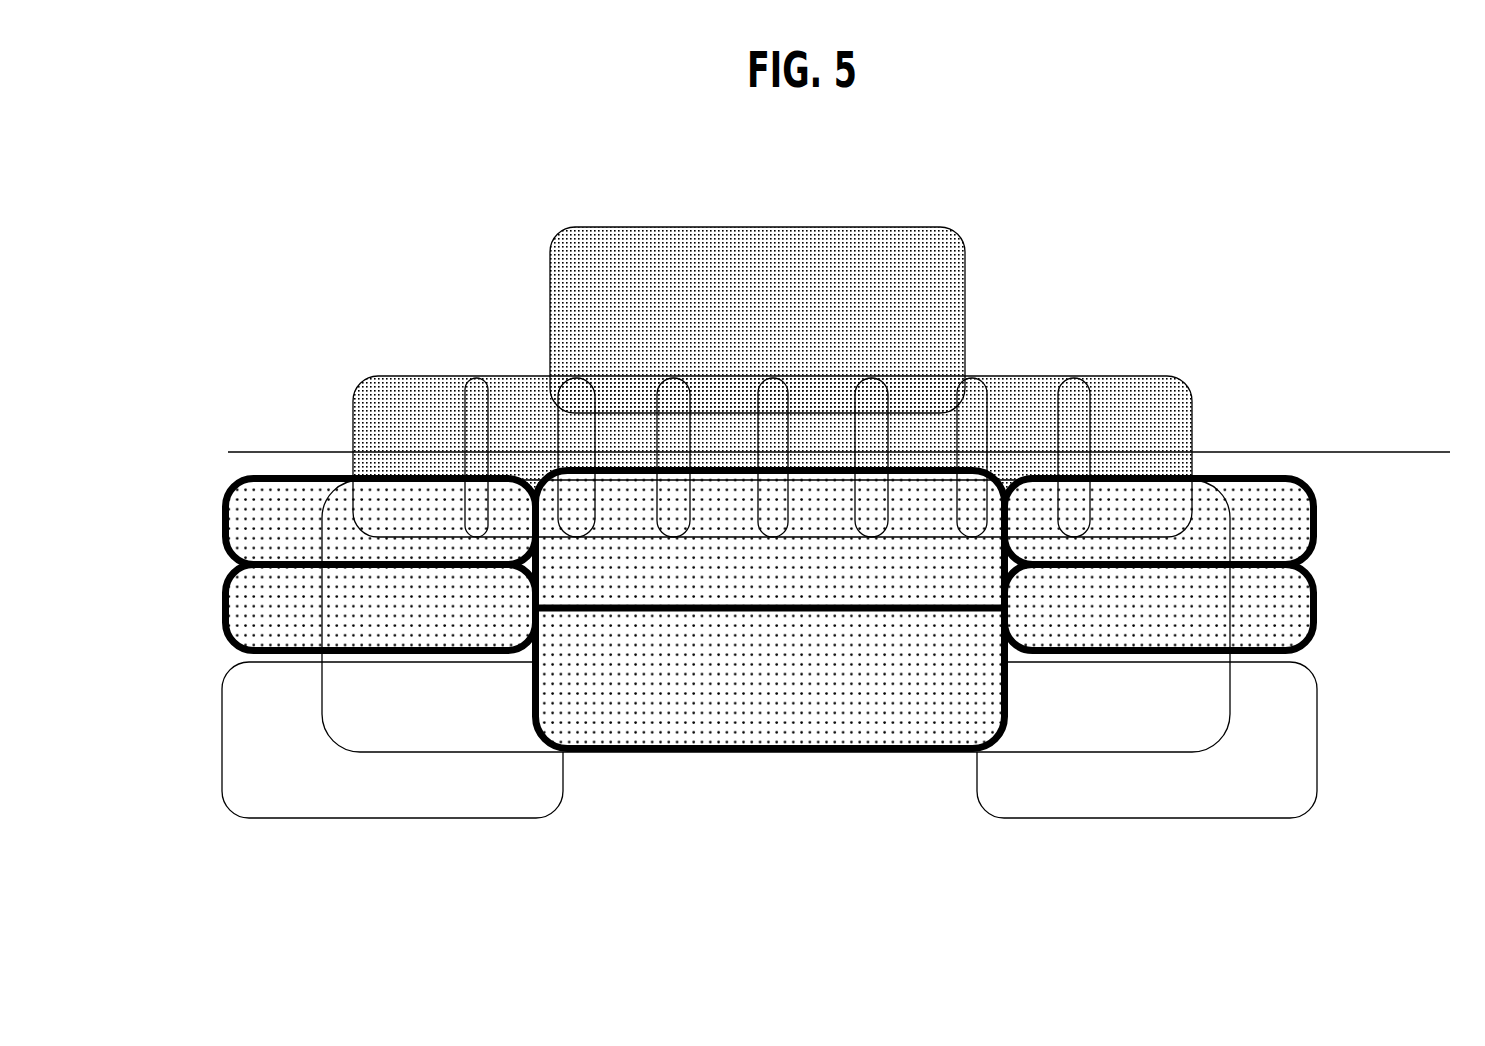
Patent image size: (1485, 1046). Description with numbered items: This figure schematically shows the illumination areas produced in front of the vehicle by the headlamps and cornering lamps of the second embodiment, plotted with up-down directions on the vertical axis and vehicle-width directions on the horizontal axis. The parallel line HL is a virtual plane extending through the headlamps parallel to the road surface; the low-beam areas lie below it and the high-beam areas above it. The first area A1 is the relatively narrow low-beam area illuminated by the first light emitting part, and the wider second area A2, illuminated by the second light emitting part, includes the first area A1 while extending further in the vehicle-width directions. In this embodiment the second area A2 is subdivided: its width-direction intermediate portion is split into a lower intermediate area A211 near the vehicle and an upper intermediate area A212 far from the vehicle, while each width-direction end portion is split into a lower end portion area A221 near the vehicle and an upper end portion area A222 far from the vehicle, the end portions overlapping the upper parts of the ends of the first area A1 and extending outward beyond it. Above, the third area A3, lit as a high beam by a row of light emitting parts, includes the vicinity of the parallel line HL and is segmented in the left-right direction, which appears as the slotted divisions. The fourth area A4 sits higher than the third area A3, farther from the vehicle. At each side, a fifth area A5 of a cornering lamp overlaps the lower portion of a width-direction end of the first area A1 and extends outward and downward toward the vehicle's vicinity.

The first area A1 is at (1230, 690).
The second area A2 is at (785, 647).
The lower intermediate area A211 is at (835, 755).
The upper intermediate area A212 is at (662, 577).
The lower end portion area A221 is at (221, 609).
The upper end portion area A222 is at (221, 526).
The third area A3 is at (1123, 374).
The fourth area A4 is at (771, 227).
The fifth area A5 is at (392, 818).
The parallel line HL is at (268, 451).